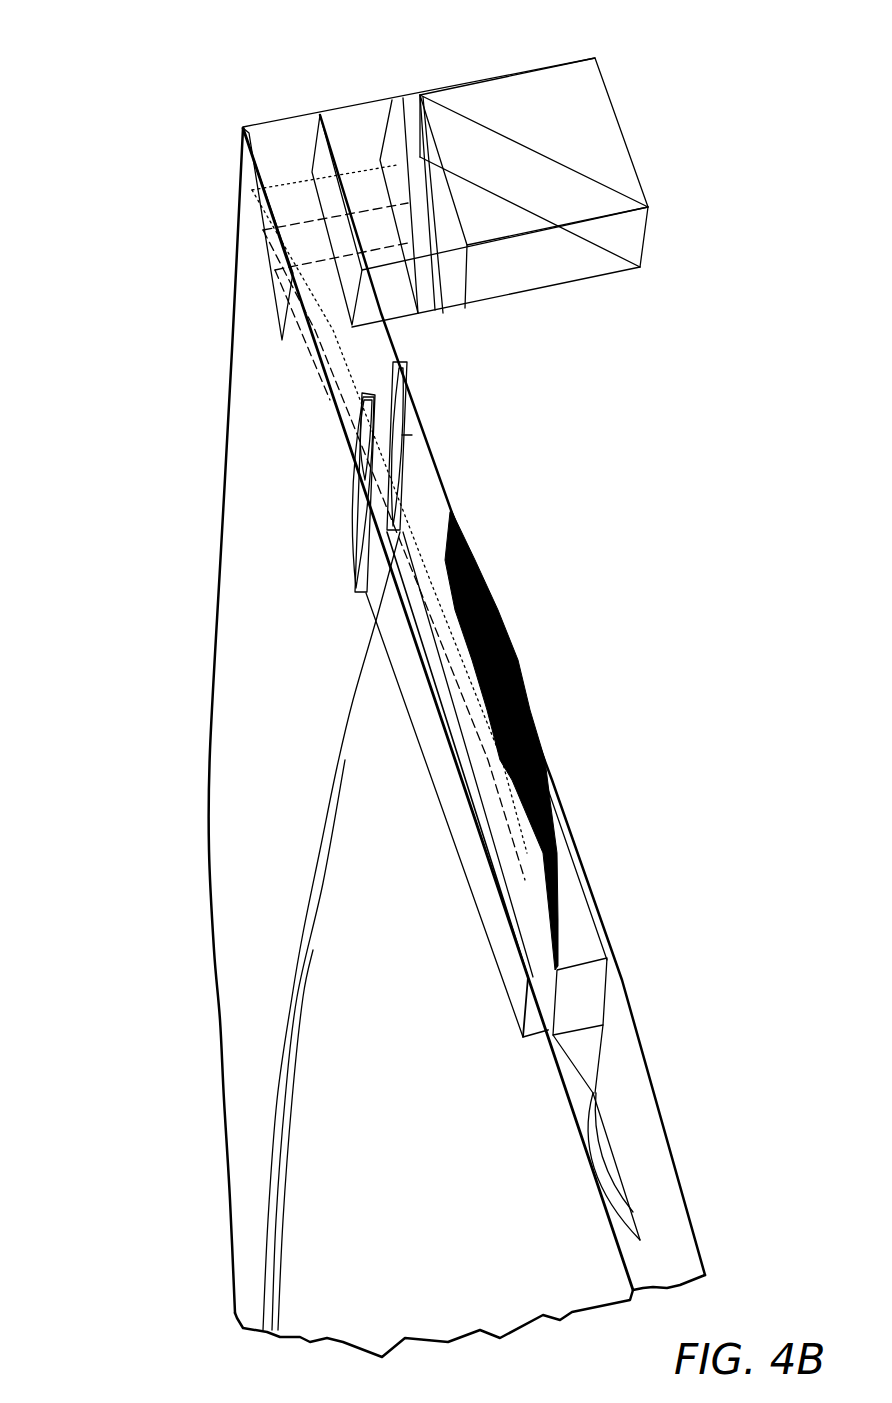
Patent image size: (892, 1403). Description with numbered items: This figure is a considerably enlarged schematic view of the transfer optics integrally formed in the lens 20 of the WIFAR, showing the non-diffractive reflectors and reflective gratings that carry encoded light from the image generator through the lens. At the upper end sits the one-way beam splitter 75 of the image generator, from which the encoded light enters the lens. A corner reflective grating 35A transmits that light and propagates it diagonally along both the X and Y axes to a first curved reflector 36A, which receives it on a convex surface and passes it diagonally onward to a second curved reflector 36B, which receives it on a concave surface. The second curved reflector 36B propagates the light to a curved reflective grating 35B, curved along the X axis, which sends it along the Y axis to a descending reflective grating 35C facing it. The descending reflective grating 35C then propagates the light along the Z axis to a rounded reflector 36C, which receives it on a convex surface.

The lens 20 is at (208, 748).
The one-way beam splitter 75 is at (572, 76).
The corner reflective grating 35A is at (248, 167).
The curved reflective grating 35B is at (600, 986).
The descending reflective grating 35C is at (517, 1002).
The first curved reflector 36A is at (400, 392).
The second curved reflector 36B is at (353, 468).
The rounded reflector 36C is at (622, 1200).